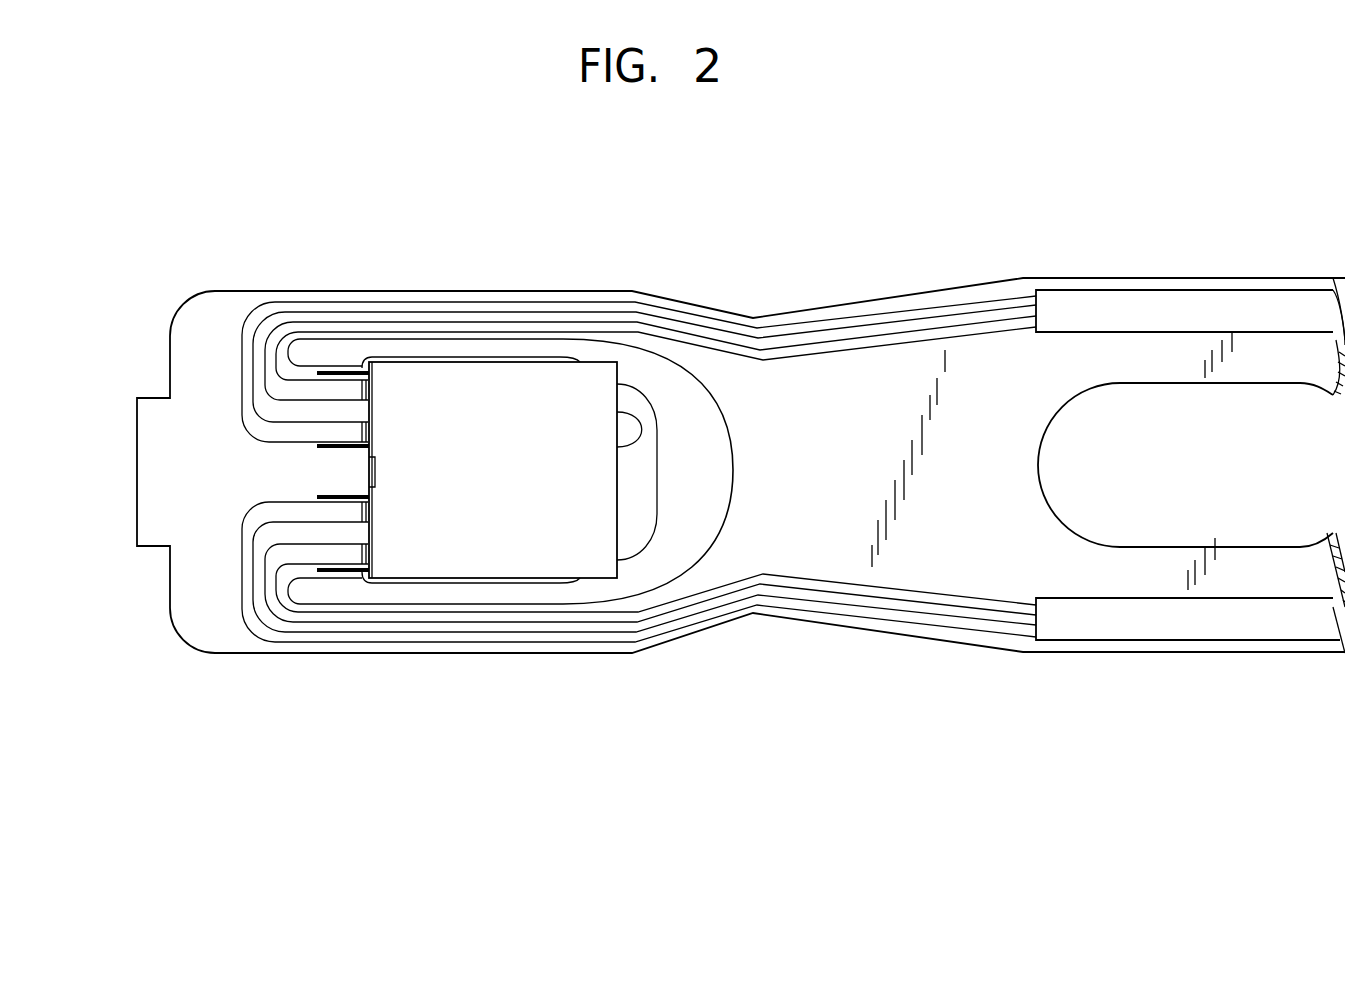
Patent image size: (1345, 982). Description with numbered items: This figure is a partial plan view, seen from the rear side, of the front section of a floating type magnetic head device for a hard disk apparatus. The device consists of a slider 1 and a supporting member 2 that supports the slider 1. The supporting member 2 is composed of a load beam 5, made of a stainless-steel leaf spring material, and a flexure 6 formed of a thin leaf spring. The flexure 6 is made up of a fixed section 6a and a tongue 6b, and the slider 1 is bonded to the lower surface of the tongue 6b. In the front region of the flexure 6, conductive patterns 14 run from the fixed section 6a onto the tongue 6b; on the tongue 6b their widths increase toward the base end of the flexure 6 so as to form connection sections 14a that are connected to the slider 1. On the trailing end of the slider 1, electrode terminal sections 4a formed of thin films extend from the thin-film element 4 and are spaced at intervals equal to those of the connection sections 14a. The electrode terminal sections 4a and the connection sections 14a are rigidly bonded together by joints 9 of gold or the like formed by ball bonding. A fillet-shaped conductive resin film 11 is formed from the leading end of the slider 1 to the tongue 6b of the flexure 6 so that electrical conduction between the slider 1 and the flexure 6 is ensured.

The slider 1 is at (523, 390).
The supporting member 2 is at (930, 272).
The thin-film element 4 is at (378, 475).
The electrode terminal sections 4a is at (362, 425).
The load beam 5 is at (1007, 642).
The flexure 6 is at (207, 320).
The fixed section 6a is at (355, 653).
The tongue 6b is at (637, 513).
The joints 9 is at (360, 552).
The conductive resin film 11 is at (630, 427).
The conductive patterns 14 is at (268, 355).
The connection sections 14a is at (298, 397).